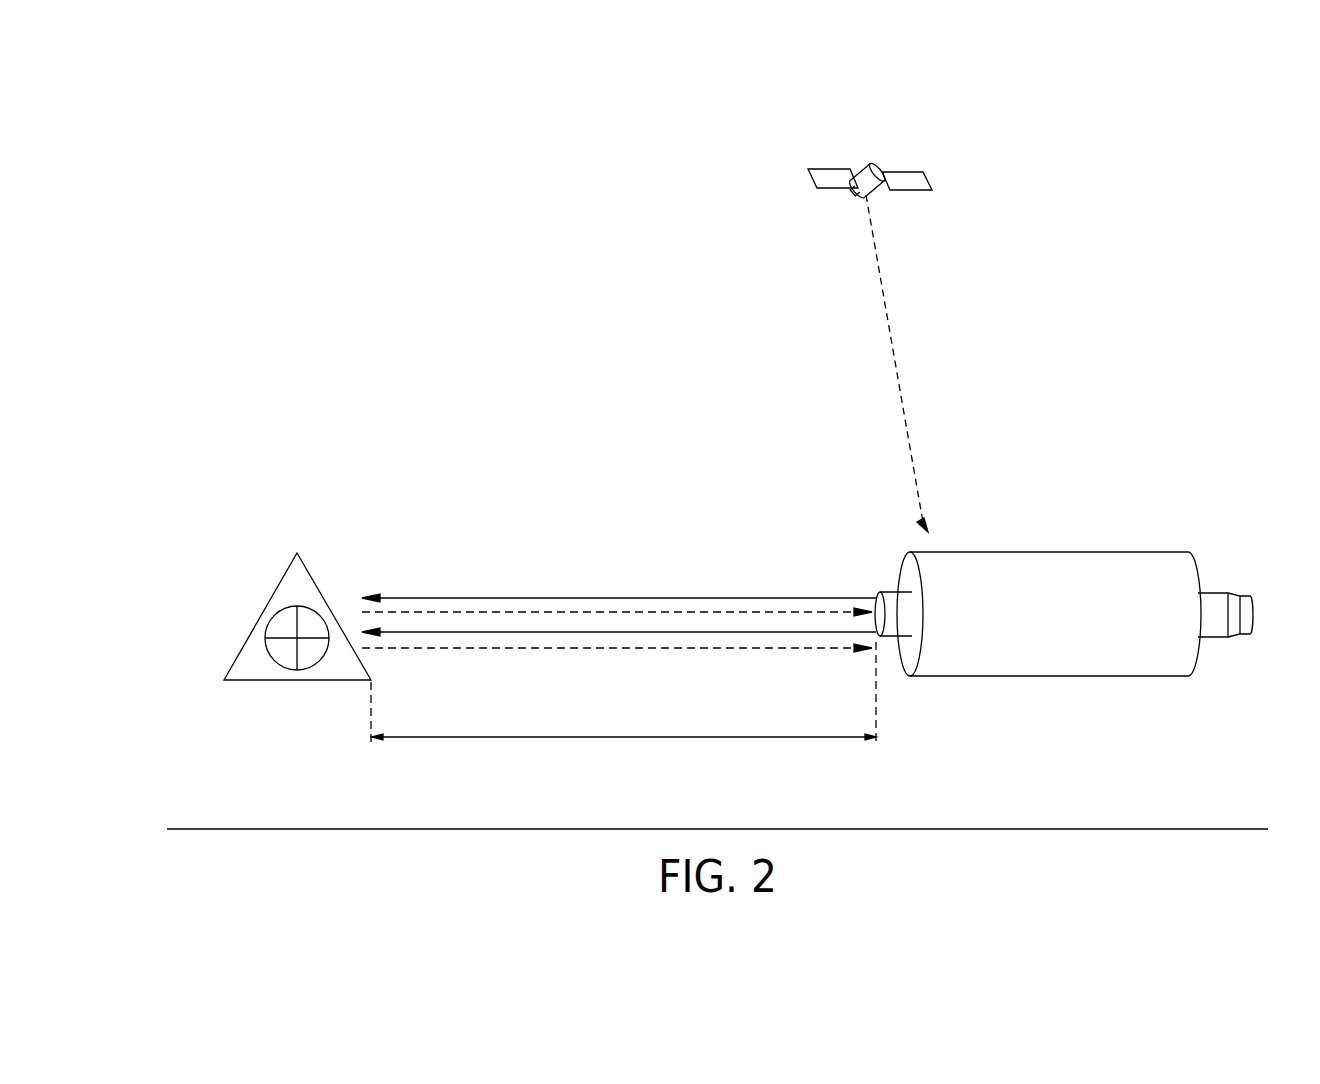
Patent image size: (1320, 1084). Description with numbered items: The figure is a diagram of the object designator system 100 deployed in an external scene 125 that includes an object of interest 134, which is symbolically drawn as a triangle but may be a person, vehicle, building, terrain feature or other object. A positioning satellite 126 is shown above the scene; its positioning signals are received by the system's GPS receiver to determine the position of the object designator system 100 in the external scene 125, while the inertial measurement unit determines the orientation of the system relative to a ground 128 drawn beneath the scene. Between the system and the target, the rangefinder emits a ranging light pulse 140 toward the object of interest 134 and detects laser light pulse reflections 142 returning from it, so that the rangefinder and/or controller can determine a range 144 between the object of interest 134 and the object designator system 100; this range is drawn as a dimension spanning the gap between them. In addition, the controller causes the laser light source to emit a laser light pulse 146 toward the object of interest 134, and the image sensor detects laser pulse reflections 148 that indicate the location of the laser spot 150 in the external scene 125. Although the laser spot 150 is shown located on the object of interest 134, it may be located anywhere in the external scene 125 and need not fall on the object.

The object designator system 100 is at (1083, 537).
The external scene 125 is at (318, 358).
The positioning satellite 126 is at (872, 162).
The ground 128 is at (178, 828).
The object of interest 134 is at (297, 553).
The ranging light pulse 140 is at (658, 598).
The laser light pulse reflections 142 is at (714, 612).
The range 144 is at (650, 740).
The laser light pulse 146 is at (442, 632).
The laser pulse reflections 148 is at (539, 648).
The laser spot 150 is at (265, 634).